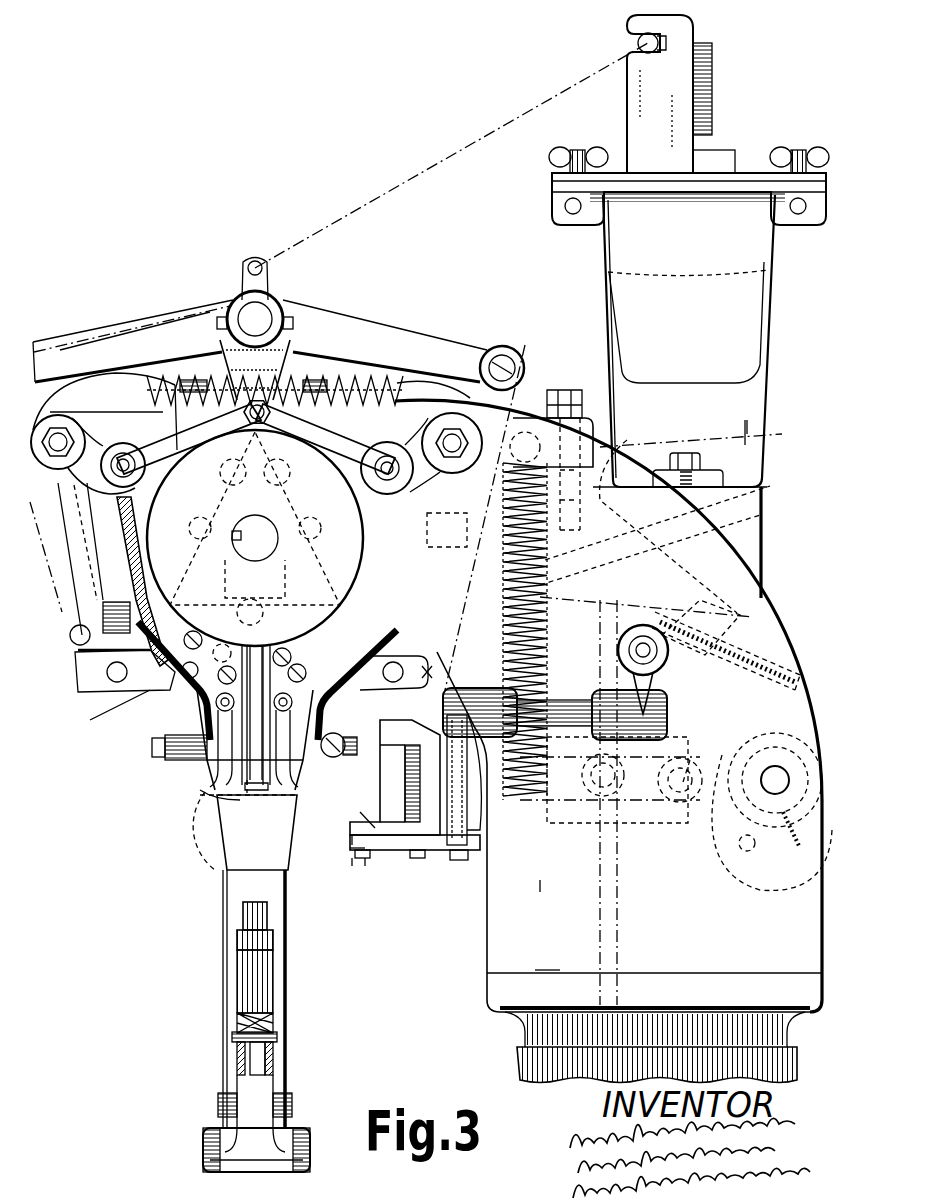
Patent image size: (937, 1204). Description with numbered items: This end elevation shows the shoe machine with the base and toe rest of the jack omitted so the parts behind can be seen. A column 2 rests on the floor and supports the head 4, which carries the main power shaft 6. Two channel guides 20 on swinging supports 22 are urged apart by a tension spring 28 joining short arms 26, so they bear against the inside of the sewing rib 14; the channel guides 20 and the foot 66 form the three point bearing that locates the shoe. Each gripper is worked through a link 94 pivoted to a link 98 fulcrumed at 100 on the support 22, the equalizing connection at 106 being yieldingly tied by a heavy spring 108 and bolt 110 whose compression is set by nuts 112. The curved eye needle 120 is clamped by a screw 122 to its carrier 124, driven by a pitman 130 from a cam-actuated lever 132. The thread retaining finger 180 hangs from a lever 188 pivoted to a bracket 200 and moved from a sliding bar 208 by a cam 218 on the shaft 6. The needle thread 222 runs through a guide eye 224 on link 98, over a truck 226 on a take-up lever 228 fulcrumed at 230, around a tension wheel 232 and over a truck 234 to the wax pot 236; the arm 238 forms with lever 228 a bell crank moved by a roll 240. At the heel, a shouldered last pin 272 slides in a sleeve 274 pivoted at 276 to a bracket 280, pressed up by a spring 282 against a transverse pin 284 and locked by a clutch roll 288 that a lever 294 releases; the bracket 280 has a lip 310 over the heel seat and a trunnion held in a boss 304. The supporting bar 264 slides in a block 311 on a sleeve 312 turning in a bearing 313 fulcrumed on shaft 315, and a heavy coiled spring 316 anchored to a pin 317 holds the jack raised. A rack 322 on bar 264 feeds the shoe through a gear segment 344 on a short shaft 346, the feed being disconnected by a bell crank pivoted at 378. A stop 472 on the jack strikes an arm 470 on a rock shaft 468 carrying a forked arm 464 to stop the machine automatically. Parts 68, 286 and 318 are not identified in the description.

The column 2 is at (518, 1060).
The head 4 is at (487, 1005).
The main power shaft 6 is at (140, 390).
The sewing rib 14 is at (352, 840).
The channel guides 20 is at (350, 852).
The swinging supports 22 is at (112, 543).
The short arms 26 is at (375, 415).
The tension spring 28 is at (245, 410).
The foot 66 is at (245, 765).
The valve stem guide 68 is at (215, 782).
The link 94 is at (140, 690).
The link 98 is at (105, 662).
The fulcrum 100 is at (70, 632).
The connection 106 is at (470, 410).
The spring 108 is at (765, 488).
The bolt 110 is at (575, 392).
The nuts 112 is at (560, 395).
The curved eye needle 120 is at (368, 815).
The screw 122 is at (160, 748).
The needle carrier 124 is at (212, 752).
The pitman 130 is at (172, 702).
The lever 132 is at (87, 393).
The thread retaining finger 180 is at (205, 792).
The lever 188 is at (175, 730).
The bracket 200 is at (88, 648).
The sliding bar 208 is at (175, 387).
The cam 218 is at (395, 460).
The needle thread 222 is at (390, 752).
The guide eye 224 is at (428, 676).
The truck 226 is at (515, 462).
The take-up lever 228 is at (333, 330).
The fulcrum 230 is at (270, 318).
The tension wheel 232 is at (236, 338).
The truck 234 is at (638, 43).
The wax pot 236 is at (630, 288).
The arm 238 is at (345, 375).
The roll 240 is at (238, 528).
The supporting bar 264 is at (400, 793).
The last pin 272 is at (268, 910).
The sleeve 274 is at (258, 968).
The pivot 276 is at (205, 1147).
The bracket 280 is at (232, 1048).
The spring 282 is at (275, 1020).
The transverse pin 284 is at (278, 1038).
The rod 286 is at (257, 1054).
The clutch roll 288 is at (218, 1108).
The lever 294 is at (222, 1093).
The boss 304 is at (228, 880).
The lip 310 is at (235, 835).
The block 311 is at (355, 858).
The sleeve 312 is at (460, 690).
The bearing 313 is at (458, 735).
The shaft 315 is at (776, 775).
The coiled spring 316 is at (550, 590).
The pin 317 is at (683, 782).
The shaft 318 is at (745, 437).
The rack 322 is at (412, 828).
The gear segment 344 is at (690, 772).
The short shaft 346 is at (760, 622).
The pivot 378 is at (755, 602).
The forked arm 464 is at (535, 970).
The rock shaft 468 is at (540, 880).
The arm 470 is at (458, 860).
The stop 472 is at (385, 858).